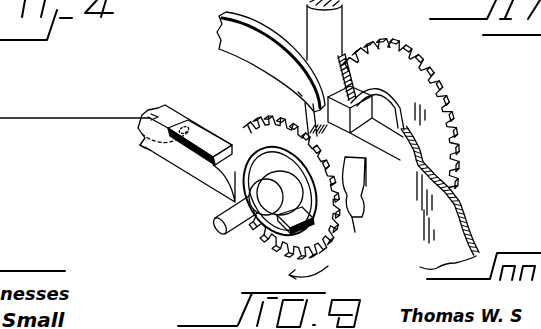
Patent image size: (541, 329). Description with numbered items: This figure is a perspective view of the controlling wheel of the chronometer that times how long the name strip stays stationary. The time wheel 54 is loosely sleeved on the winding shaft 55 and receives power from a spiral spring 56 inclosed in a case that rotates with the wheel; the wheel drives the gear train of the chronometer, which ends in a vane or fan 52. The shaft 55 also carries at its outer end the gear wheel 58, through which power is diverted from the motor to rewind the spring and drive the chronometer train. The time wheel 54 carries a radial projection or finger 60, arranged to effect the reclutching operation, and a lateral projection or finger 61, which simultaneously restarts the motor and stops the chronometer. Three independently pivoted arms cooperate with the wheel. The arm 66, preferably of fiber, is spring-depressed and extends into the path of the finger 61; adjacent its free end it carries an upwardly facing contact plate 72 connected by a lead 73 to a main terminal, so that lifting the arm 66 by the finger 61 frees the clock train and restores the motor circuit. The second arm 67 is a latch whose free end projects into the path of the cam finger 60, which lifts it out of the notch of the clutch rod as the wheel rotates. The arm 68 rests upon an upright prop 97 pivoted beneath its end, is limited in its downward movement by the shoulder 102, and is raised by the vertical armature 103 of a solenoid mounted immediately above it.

The vane or fan 52 is at (313, 150).
The time wheel 54 is at (355, 233).
The winding shaft 55 is at (240, 229).
The spiral spring 56 is at (354, 189).
The gear wheel 58 is at (441, 90).
The radial projection or finger 60 is at (298, 92).
The lateral projection or finger 61 is at (280, 235).
The arm 66 is at (157, 110).
The second arm 67 is at (272, 31).
The arm 68 is at (350, 78).
The contact plate 72 is at (200, 131).
The lead 73 is at (145, 148).
The upright prop 97 is at (364, 160).
The shoulder 102 is at (380, 104).
The vertical armature 103 is at (343, 14).